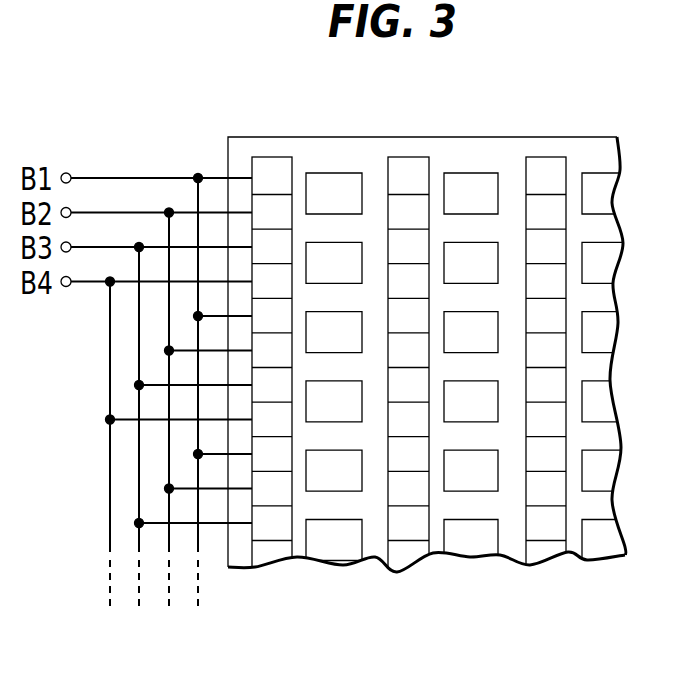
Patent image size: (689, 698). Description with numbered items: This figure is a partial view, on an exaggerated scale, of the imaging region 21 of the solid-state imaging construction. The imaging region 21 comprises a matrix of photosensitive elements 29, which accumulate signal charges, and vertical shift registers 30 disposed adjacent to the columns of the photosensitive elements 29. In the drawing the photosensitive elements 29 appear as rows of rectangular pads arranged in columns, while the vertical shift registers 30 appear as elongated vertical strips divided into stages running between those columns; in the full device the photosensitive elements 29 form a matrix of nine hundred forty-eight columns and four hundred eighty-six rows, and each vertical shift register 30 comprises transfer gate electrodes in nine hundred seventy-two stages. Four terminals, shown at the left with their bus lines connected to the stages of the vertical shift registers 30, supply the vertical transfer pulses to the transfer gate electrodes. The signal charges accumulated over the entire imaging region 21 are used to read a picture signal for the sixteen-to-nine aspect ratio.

The imaging region 21 is at (411, 135).
The photosensitive elements 29 is at (328, 172).
The vertical shift registers 30 is at (277, 155).